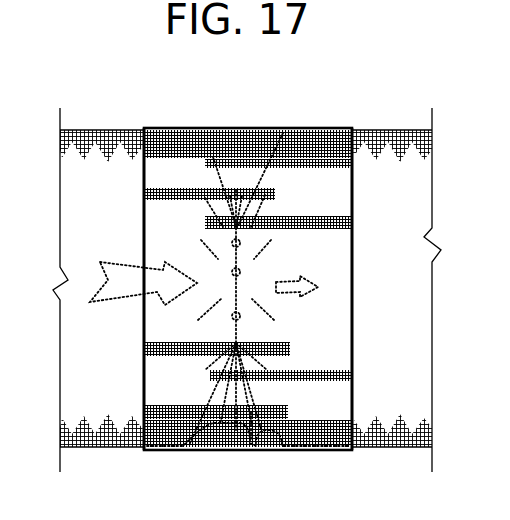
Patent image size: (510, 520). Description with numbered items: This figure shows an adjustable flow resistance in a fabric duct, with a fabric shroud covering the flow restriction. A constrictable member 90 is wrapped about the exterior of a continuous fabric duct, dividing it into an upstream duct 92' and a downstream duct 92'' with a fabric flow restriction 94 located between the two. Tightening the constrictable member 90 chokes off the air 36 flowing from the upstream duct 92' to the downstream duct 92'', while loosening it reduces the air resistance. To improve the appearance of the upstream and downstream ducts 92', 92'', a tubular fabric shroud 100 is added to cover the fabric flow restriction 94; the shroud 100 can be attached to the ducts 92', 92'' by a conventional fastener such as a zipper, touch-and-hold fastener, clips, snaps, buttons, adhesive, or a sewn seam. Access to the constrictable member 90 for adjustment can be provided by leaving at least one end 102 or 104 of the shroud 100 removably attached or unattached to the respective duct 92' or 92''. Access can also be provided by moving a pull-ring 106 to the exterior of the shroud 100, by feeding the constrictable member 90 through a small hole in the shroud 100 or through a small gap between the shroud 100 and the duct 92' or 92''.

The air 36 is at (127, 297).
The constrictable member 90 is at (230, 442).
The upstream duct 92' is at (93, 266).
The downstream duct 92'' is at (396, 269).
The fabric flow restriction 94 is at (213, 155).
The tubular fabric shroud 100 is at (330, 128).
The end of shroud 102 is at (143, 233).
The end of shroud 104 is at (353, 235).
The pull-ring 106 is at (252, 412).